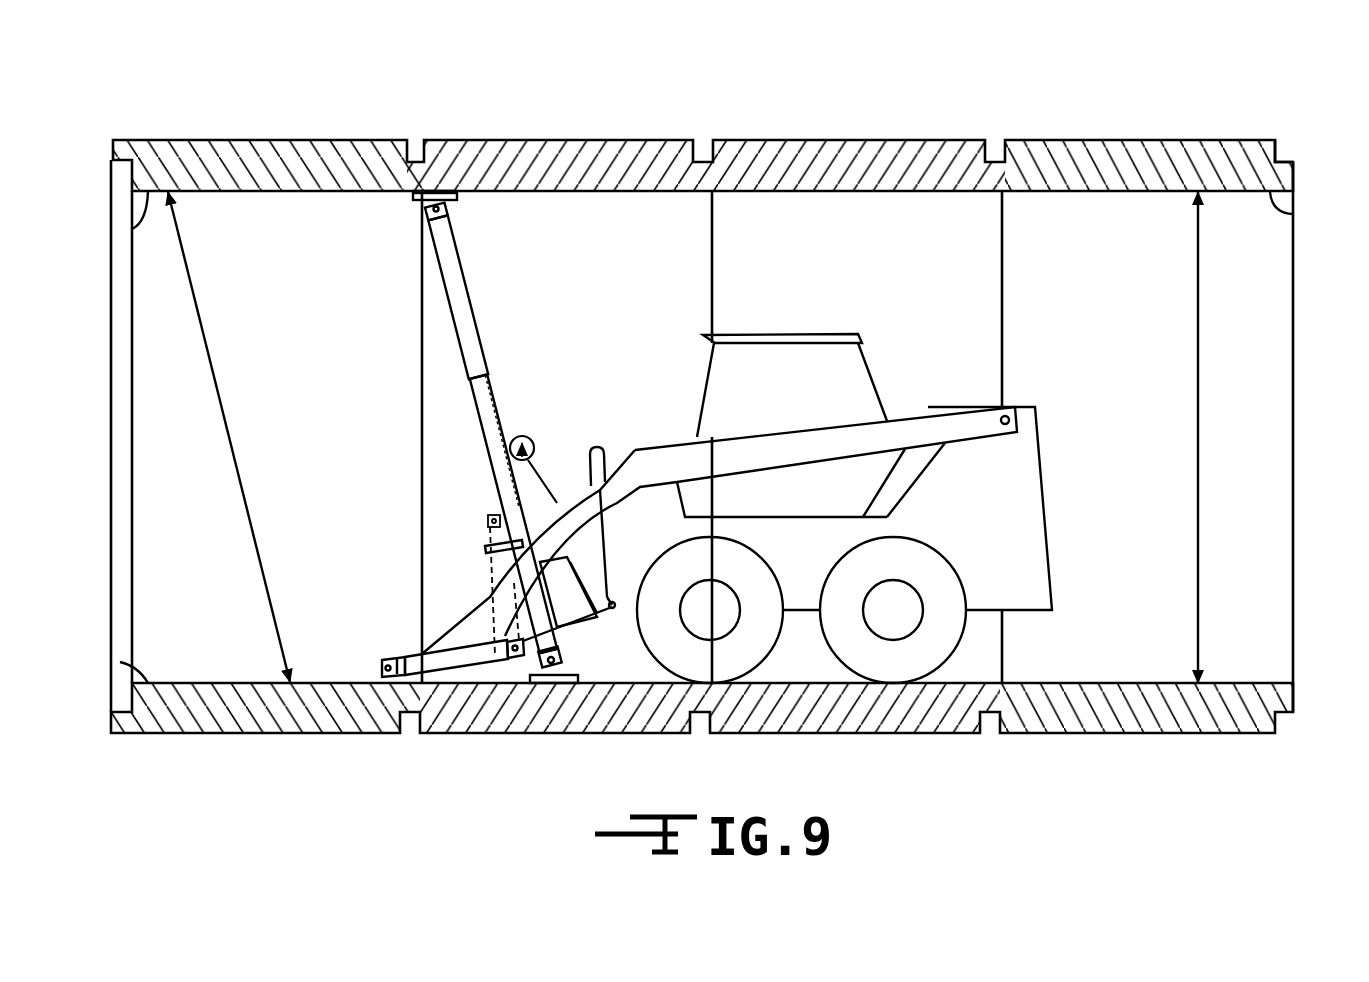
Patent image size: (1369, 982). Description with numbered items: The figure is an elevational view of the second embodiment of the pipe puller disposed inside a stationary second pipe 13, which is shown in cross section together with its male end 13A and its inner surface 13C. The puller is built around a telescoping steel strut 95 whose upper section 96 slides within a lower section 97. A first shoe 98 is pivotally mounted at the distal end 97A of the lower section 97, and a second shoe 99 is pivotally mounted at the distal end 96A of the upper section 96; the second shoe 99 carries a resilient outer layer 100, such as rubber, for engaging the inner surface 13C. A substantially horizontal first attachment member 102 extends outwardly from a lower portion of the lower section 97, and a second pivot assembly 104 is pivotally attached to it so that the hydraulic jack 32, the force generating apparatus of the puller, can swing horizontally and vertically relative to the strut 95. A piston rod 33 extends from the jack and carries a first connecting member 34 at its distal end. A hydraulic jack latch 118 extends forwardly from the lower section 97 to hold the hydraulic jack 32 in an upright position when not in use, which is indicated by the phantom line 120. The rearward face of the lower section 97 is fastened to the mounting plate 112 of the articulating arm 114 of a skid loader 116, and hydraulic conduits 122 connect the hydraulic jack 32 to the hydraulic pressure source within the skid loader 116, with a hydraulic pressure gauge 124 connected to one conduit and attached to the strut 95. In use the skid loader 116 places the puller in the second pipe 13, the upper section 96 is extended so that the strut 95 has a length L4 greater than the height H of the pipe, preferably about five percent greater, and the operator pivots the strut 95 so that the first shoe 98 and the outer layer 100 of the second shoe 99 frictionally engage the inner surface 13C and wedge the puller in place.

The second pipe 13 is at (322, 126).
The male end 13A is at (1286, 146).
The inner surface 13C is at (132, 229).
The strut 95 is at (477, 482).
The upper section 96 is at (479, 362).
The distal end 96A is at (442, 229).
The lower section 97 is at (490, 404).
The distal end 97A is at (557, 634).
The first shoe 98 is at (580, 683).
The second shoe 99 is at (457, 201).
The outer layer 100 is at (413, 194).
The first attachment member 102 is at (543, 669).
The second pivot assembly 104 is at (512, 672).
The hydraulic jack 32 is at (470, 664).
The piston rod 33 is at (396, 658).
The first connecting member 34 is at (382, 664).
The mounting plate 112 is at (643, 633).
The articulating arm 114 is at (618, 602).
The skid loader 116 is at (1036, 540).
The hydraulic jack latch 118 is at (485, 546).
The phantom line 120 is at (483, 563).
The hydraulic conduits 122 is at (607, 446).
The hydraulic pressure gauge 124 is at (535, 444).
The length L4 is at (224, 437).
The height H is at (1202, 333).